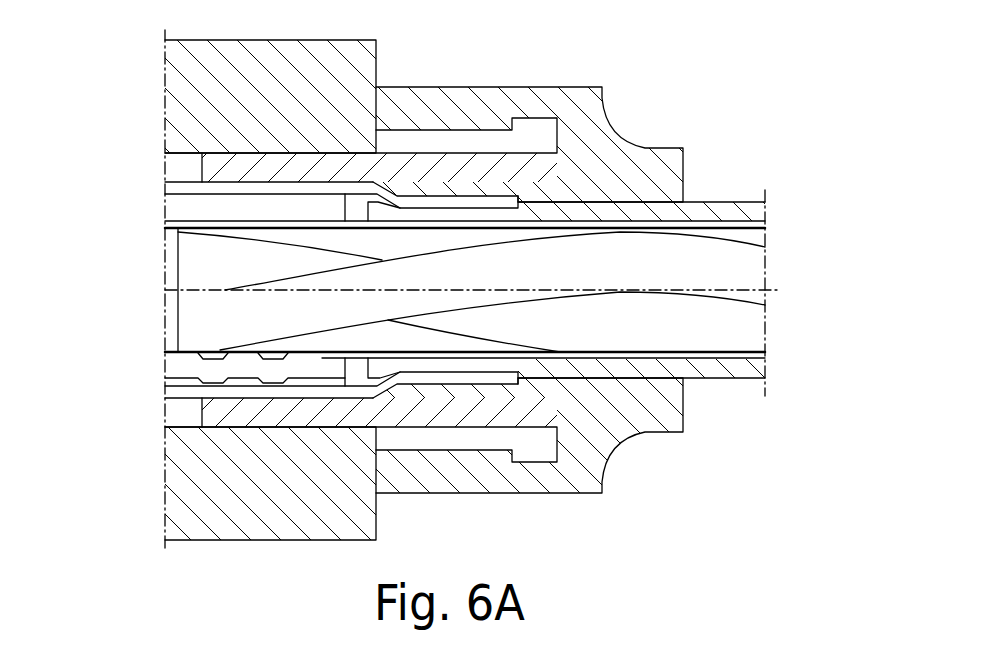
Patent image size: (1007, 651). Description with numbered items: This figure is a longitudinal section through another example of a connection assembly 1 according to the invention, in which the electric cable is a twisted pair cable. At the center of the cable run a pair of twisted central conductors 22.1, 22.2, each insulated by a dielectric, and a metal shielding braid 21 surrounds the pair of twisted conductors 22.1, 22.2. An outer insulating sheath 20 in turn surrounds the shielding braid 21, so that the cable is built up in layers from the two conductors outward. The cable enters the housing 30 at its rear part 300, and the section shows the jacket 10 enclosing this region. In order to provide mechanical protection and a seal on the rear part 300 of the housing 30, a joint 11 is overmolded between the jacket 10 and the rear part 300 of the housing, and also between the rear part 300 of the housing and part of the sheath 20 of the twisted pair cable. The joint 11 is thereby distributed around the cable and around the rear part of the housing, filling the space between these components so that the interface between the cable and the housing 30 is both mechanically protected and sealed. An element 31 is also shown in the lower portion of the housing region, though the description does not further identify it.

The optical connector assembly 1 is at (147, 73).
The jacket 10 is at (228, 182).
The joint 11 is at (598, 136).
The rear part of the housing 300 is at (447, 128).
The outer insulating sheath 20 is at (703, 202).
The metal shielding braid 21 is at (766, 228).
The twisted central conductor 22.1 is at (750, 272).
The twisted central conductor 22.2 is at (757, 320).
The housing 30 is at (172, 495).
The insert element 31 is at (166, 368).